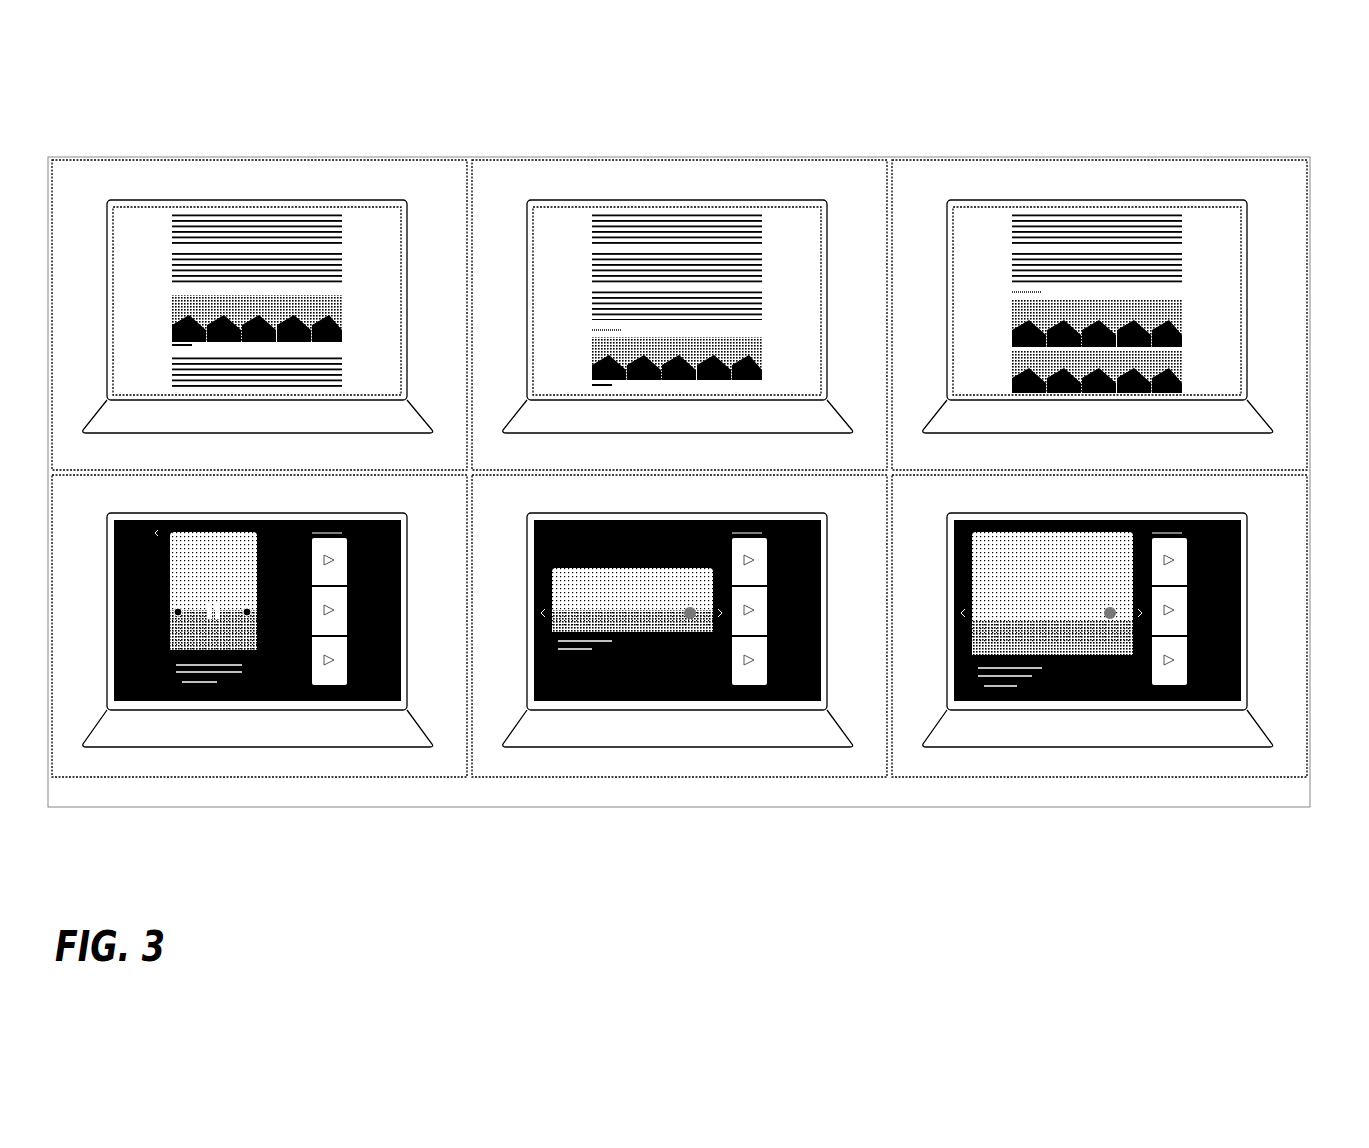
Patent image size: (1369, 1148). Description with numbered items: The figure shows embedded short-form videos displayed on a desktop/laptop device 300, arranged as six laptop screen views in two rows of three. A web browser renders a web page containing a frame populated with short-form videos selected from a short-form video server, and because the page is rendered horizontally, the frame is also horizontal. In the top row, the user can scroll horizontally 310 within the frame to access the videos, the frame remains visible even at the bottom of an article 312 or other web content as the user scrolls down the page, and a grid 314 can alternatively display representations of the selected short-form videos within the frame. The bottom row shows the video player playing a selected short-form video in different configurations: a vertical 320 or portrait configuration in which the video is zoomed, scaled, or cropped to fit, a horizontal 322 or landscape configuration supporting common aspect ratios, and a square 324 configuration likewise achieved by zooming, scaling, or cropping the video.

The desktop/laptop device 300 is at (1253, 88).
The horizontal scroll 310 is at (281, 200).
The bottom of an article 312 is at (687, 202).
The grid 314 is at (1080, 202).
The vertical configuration 320 is at (279, 710).
The horizontal configuration 322 is at (708, 710).
The square configuration 324 is at (1105, 710).